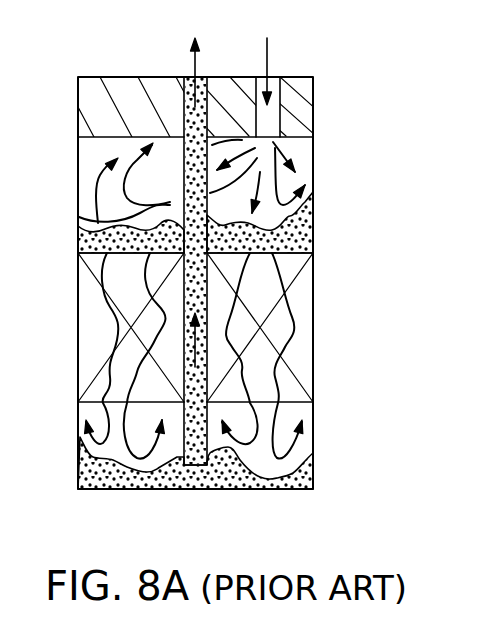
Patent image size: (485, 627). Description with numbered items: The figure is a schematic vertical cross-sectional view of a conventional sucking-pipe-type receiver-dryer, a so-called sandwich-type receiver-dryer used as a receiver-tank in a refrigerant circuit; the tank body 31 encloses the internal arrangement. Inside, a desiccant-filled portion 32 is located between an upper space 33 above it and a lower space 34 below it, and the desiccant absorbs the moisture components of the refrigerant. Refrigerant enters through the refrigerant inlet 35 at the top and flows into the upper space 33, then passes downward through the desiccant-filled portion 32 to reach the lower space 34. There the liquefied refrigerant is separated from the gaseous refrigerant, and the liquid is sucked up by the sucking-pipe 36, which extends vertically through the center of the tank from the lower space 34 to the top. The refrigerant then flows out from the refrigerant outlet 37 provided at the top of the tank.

The reaction vessel 31 is at (78, 161).
The desiccant-filled portion 32 is at (302, 353).
The upper space 33 is at (88, 199).
The lower space 34 is at (258, 457).
The refrigerant inlet 35 is at (282, 108).
The sucking-pipe 36 is at (188, 430).
The refrigerant outlet 37 is at (190, 77).